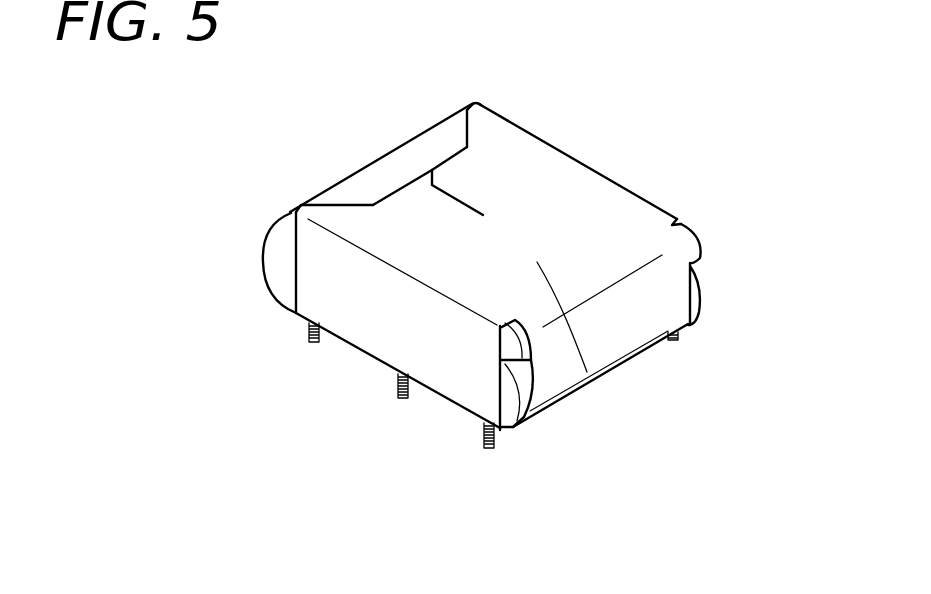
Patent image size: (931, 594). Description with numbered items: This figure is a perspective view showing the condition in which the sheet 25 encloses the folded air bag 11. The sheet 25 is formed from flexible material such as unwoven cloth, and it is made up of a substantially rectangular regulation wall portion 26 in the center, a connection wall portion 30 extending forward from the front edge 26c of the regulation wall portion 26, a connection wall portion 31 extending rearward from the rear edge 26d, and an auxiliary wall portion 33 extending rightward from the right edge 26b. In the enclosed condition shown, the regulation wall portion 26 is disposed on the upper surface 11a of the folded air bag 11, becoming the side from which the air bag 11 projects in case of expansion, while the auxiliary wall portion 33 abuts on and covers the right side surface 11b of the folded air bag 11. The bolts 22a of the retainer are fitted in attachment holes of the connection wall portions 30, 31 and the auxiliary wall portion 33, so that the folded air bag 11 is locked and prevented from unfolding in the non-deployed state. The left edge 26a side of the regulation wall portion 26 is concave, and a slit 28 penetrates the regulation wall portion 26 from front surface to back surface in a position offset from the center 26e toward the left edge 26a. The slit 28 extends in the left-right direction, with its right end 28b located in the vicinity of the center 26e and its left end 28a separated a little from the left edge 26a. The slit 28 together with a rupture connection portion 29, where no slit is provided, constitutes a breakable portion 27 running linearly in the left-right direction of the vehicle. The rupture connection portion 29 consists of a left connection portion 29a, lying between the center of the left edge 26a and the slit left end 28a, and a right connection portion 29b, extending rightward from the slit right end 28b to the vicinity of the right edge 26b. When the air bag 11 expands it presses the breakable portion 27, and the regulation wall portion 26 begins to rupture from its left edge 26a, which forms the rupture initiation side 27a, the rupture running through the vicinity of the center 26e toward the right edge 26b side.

The air bag 11 is at (290, 200).
The upper surface 11a is at (367, 187).
The right side surface 11b is at (527, 383).
The bolts 22a is at (312, 342).
The sheet 25 is at (640, 152).
The regulation wall portion 26 is at (581, 157).
The left edge 26a is at (437, 151).
The right edge 26b is at (617, 295).
The front edge 26c is at (598, 162).
The rear edge 26d is at (392, 272).
The center 26e is at (492, 217).
The breakable portion 27 is at (452, 222).
The rupture initiation side 27a is at (367, 152).
The slit 28 is at (493, 165).
The left end 28a is at (431, 170).
The right end 28b is at (542, 178).
The rupture connection portion 29 is at (481, 253).
The left connection portion 29a is at (417, 176).
The right connection portion 29b is at (587, 372).
The connection wall portion 30 is at (673, 220).
The connection wall portion 31 is at (308, 268).
The auxiliary wall portion 33 is at (662, 281).